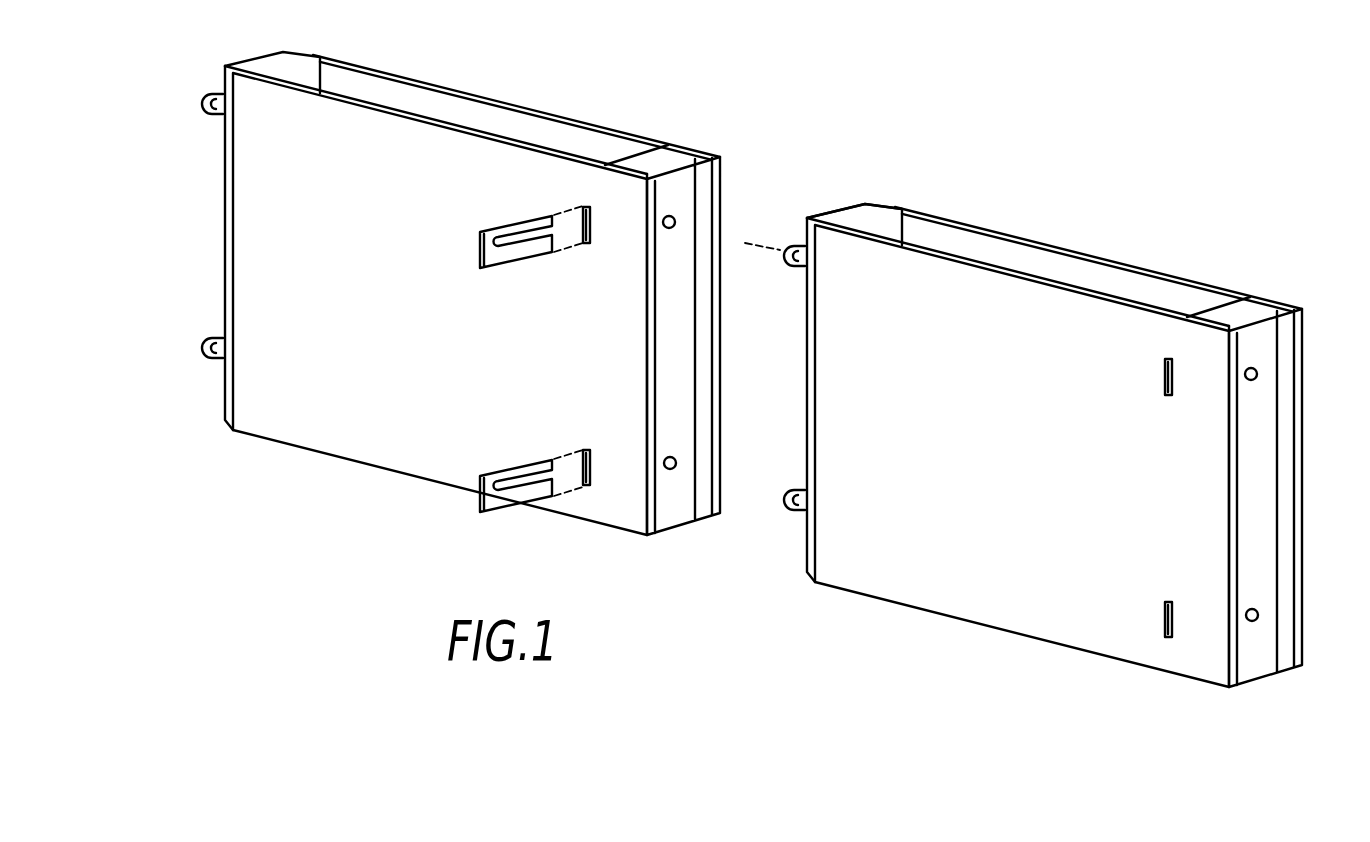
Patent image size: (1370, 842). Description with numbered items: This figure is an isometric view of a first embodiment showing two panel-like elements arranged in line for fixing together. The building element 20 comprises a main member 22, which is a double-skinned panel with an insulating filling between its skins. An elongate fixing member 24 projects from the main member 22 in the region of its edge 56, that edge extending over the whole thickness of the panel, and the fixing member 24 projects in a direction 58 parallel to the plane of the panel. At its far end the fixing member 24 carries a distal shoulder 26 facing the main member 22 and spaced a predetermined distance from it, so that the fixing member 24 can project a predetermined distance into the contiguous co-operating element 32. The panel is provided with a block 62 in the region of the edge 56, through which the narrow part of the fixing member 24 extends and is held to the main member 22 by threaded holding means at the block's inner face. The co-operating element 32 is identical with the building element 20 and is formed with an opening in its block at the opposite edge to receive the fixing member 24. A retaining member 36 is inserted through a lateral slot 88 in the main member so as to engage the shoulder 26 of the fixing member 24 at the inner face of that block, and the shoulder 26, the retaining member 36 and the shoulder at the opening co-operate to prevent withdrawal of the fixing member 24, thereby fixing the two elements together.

The building element 20 is at (1040, 419).
The main member 22 is at (1022, 456).
The elongate fixing member 24 is at (771, 388).
The distal shoulder 26 is at (771, 516).
The co-operating element 32 is at (546, 109).
The retaining member 36 is at (493, 262).
The edge 56 is at (774, 400).
The direction 58 is at (729, 238).
The block 62 is at (854, 185).
The lateral slot 88 is at (592, 228).